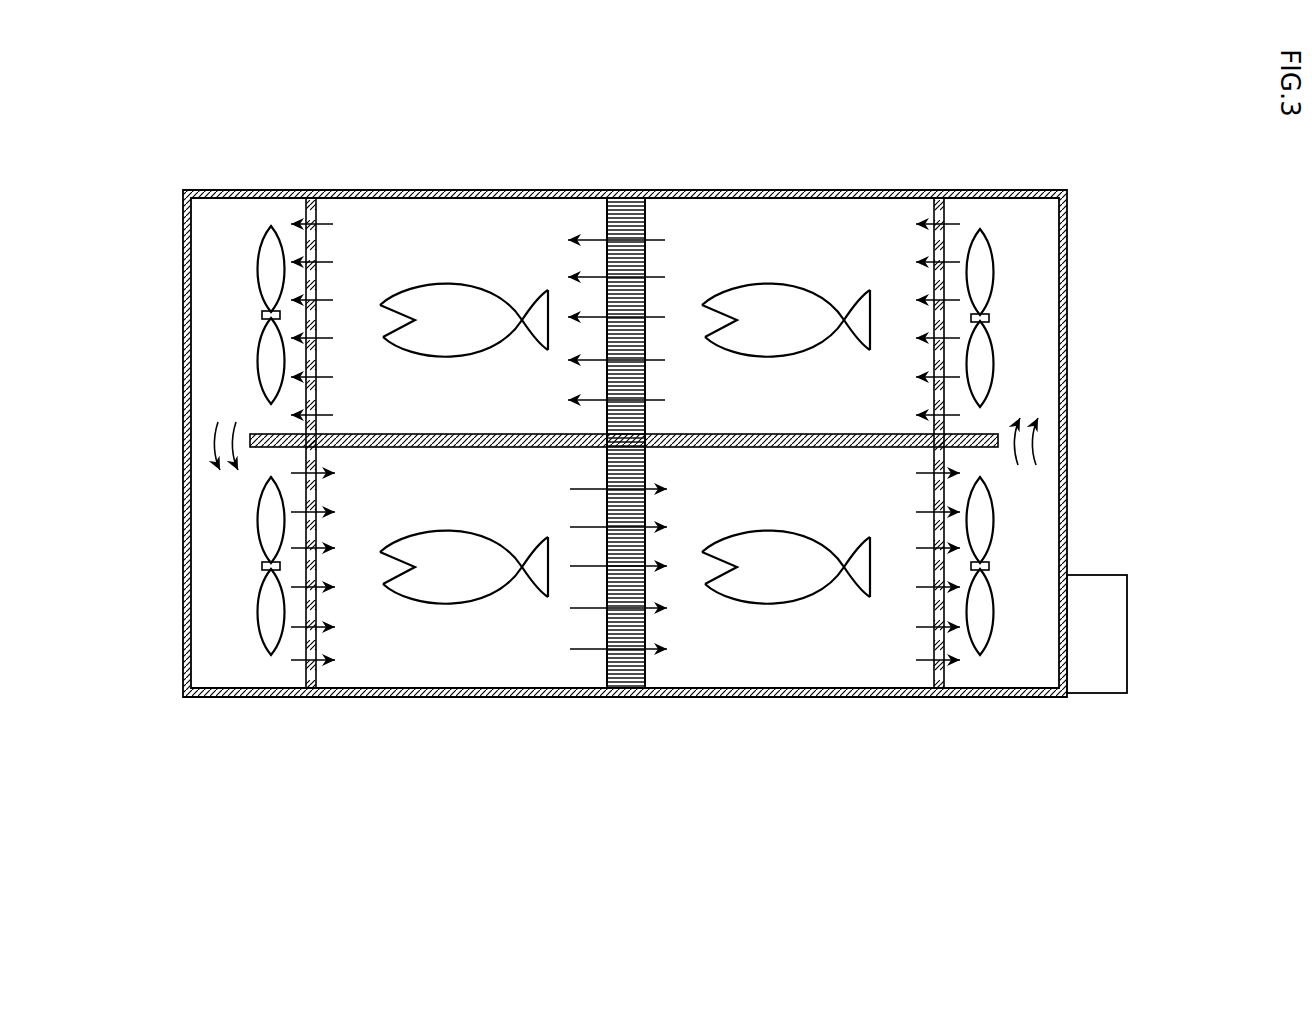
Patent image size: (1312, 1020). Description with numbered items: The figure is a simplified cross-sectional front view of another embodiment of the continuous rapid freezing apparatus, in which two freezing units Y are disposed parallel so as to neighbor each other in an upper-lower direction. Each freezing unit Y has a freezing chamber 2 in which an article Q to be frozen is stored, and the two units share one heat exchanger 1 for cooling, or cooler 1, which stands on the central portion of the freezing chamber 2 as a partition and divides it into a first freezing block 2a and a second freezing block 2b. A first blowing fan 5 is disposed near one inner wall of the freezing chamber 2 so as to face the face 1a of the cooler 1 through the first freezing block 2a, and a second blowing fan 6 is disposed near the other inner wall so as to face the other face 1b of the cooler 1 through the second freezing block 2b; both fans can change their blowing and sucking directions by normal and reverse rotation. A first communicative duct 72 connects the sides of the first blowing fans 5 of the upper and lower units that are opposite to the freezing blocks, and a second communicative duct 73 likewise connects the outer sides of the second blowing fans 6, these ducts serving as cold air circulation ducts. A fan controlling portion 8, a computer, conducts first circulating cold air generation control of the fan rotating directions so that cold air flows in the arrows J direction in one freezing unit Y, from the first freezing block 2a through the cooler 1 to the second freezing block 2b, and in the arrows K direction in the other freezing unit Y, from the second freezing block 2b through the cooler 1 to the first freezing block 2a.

The heat exchanger for cooling 1 is at (647, 425).
The face of the cooler 1a is at (607, 470).
The other face of the cooler 1b is at (645, 470).
The freezing chamber 2 is at (625, 464).
The first freezing block 2a is at (528, 253).
The second freezing block 2b is at (843, 461).
The first blowing fan 5 is at (250, 292).
The second blowing fan 6 is at (1000, 270).
The fan controlling portion 8 is at (1103, 575).
The first communicative duct 72 is at (192, 447).
The second communicative duct 73 is at (1056, 456).
The arrows K direction K is at (655, 277).
The arrows J direction J is at (655, 608).
The article to be frozen Q is at (440, 280).
The freezing unit Y is at (888, 185).